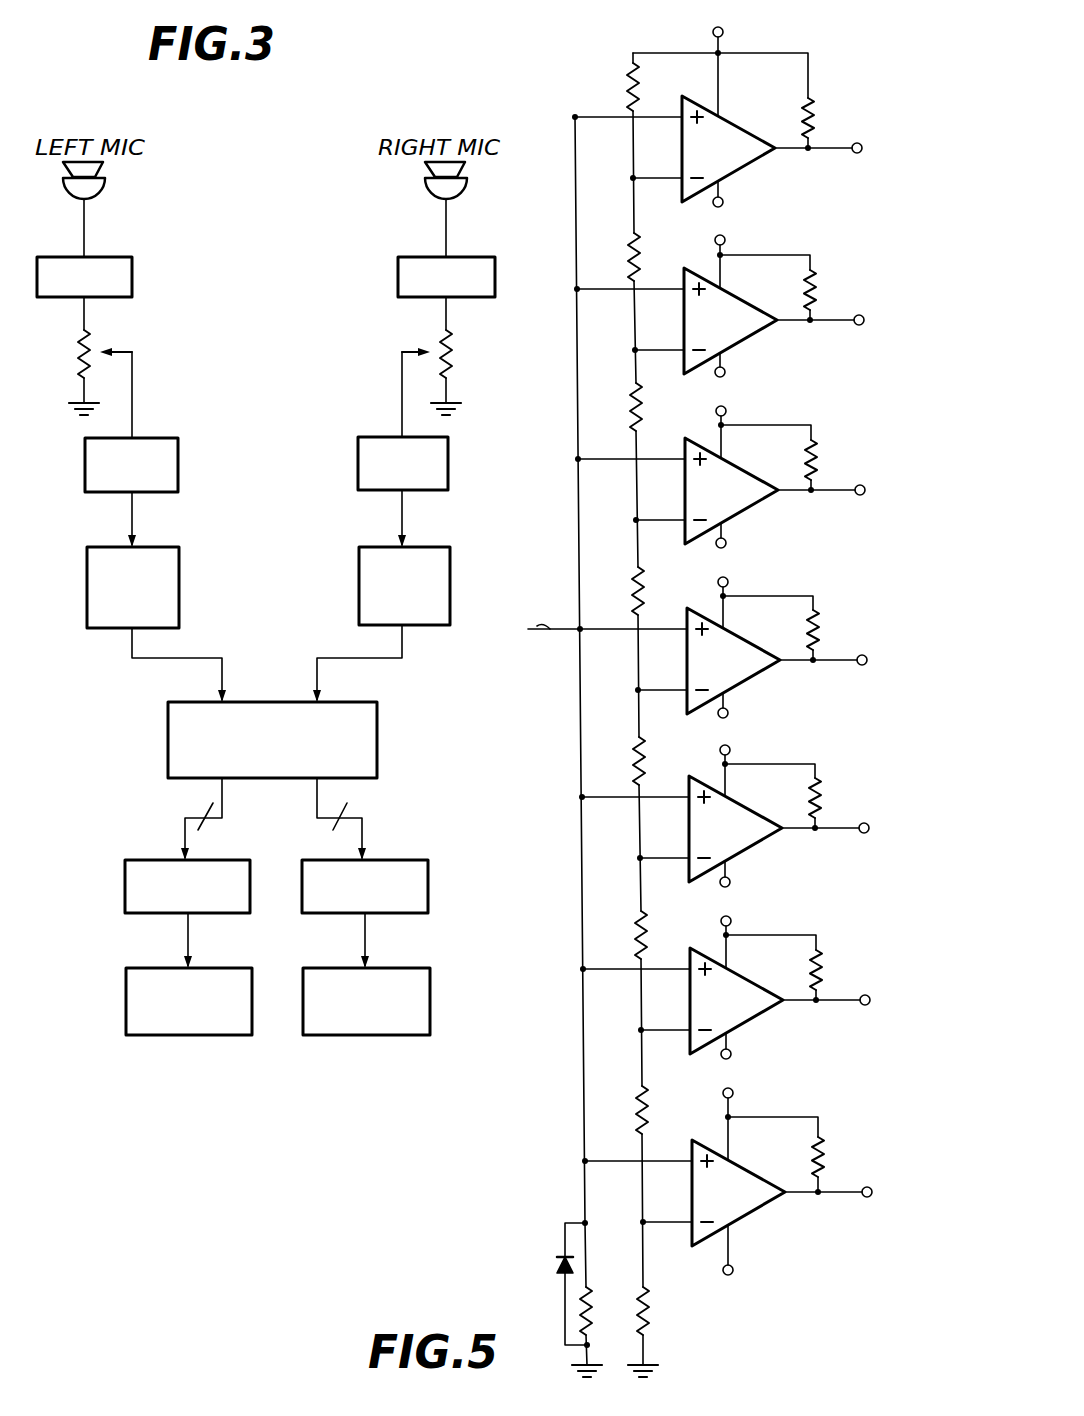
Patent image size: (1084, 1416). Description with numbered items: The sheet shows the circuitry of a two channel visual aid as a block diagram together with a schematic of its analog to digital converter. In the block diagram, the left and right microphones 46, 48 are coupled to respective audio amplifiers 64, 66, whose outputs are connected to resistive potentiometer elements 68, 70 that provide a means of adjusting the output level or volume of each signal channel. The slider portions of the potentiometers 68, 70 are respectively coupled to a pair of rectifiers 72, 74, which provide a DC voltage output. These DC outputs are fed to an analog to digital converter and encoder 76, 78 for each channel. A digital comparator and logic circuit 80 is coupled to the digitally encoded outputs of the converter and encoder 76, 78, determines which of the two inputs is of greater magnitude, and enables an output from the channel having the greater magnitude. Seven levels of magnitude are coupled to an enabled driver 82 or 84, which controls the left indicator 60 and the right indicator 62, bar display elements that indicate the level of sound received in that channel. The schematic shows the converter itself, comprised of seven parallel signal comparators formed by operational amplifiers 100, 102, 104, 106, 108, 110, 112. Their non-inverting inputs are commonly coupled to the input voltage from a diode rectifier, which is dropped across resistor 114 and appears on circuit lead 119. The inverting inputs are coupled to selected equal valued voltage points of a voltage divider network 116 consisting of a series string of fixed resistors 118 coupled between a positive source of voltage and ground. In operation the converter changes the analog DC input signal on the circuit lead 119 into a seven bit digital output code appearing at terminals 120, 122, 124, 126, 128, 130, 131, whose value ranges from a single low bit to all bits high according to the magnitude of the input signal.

In FIG. 3, the left microphone 46 is at (105, 188).
In FIG. 3, the right microphone 48 is at (467, 188).
In FIG. 3, the audio amplifier 64 is at (132, 287).
In FIG. 3, the audio amplifier 66 is at (398, 287).
In FIG. 3, the potentiometer element 68 is at (80, 358).
In FIG. 3, the potentiometer element 70 is at (456, 358).
In FIG. 3, the rectifier 72 is at (178, 456).
In FIG. 3, the rectifier 74 is at (448, 452).
In FIG. 3, the analog to digital converter and encoder 76 is at (172, 578).
In FIG. 3, the analog to digital converter and encoder 78 is at (359, 585).
In FIG. 3, the digital comparator and logic circuit 80 is at (372, 737).
In FIG. 3, the driver 82 is at (125, 885).
In FIG. 3, the driver 84 is at (428, 880).
In FIG. 3, the left indicator 60 is at (157, 1035).
In FIG. 3, the right indicator 62 is at (370, 1035).
In FIG. 5, the operational amplifier 100 is at (762, 158).
In FIG. 5, the operational amplifier 102 is at (745, 352).
In FIG. 5, the operational amplifier 104 is at (760, 498).
In FIG. 5, the operational amplifier 106 is at (757, 668).
In FIG. 5, the operational amplifier 108 is at (768, 836).
In FIG. 5, the operational amplifier 110 is at (777, 1008).
In FIG. 5, the operational amplifier 112 is at (765, 1206).
In FIG. 5, the resistor 114 is at (600, 1300).
In FIG. 5, the voltage divider network 116 is at (623, 364).
In FIG. 5, the fixed resistor 118 is at (627, 88).
In FIG. 5, the circuit lead 119 is at (563, 628).
In FIG. 5, the output terminal 120 is at (855, 156).
In FIG. 5, the output terminal 122 is at (861, 327).
In FIG. 5, the output terminal 124 is at (859, 498).
In FIG. 5, the output terminal 126 is at (860, 668).
In FIG. 5, the output terminal 128 is at (864, 836).
In FIG. 5, the output terminal 130 is at (864, 1008).
In FIG. 5, the output terminal 131 is at (864, 1200).